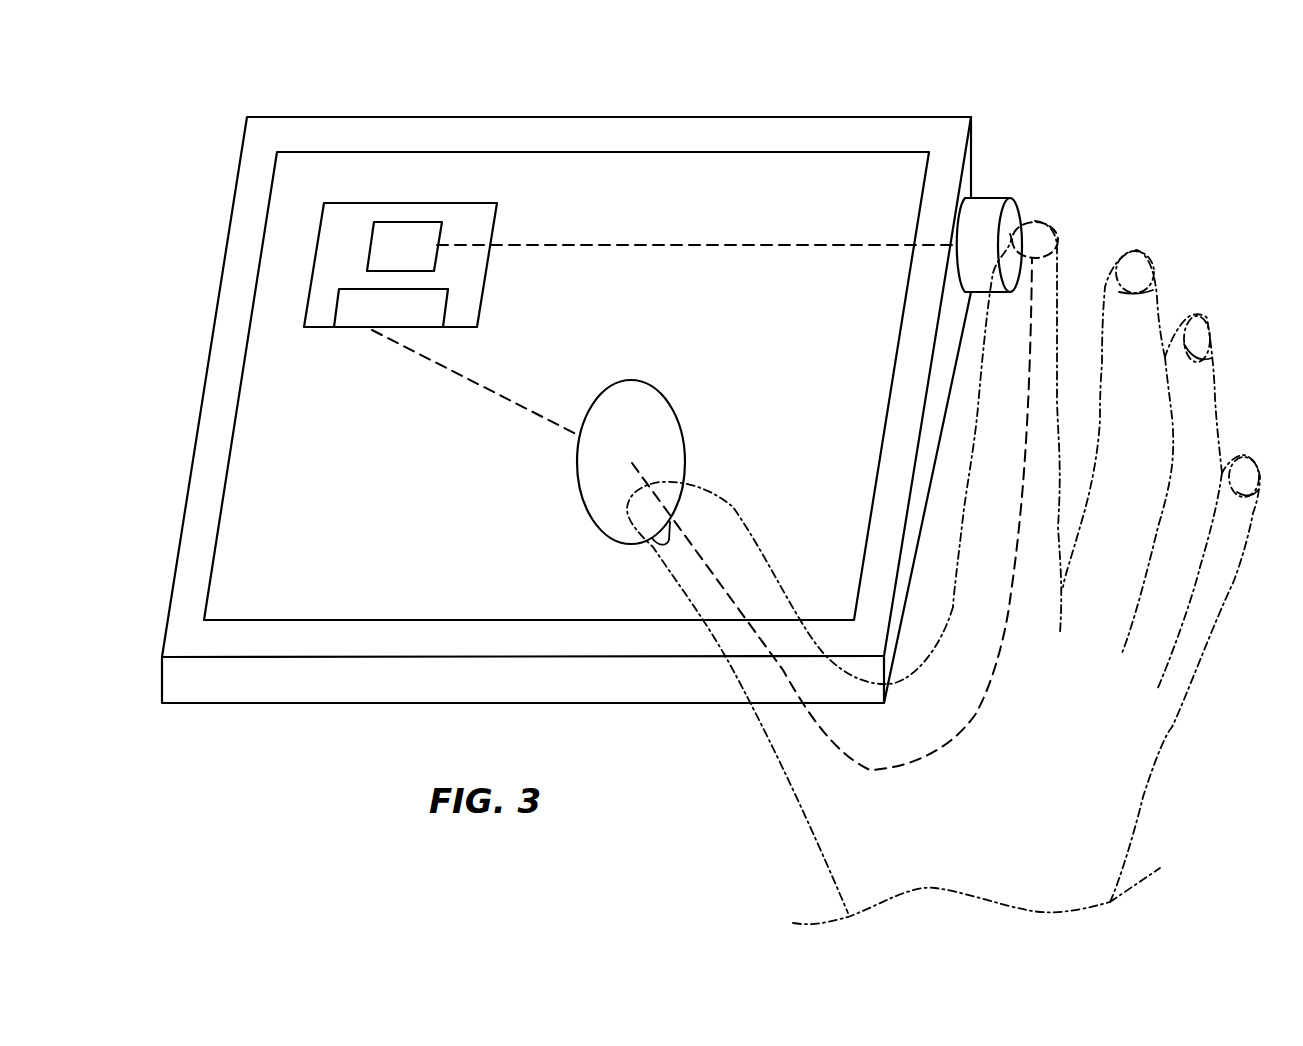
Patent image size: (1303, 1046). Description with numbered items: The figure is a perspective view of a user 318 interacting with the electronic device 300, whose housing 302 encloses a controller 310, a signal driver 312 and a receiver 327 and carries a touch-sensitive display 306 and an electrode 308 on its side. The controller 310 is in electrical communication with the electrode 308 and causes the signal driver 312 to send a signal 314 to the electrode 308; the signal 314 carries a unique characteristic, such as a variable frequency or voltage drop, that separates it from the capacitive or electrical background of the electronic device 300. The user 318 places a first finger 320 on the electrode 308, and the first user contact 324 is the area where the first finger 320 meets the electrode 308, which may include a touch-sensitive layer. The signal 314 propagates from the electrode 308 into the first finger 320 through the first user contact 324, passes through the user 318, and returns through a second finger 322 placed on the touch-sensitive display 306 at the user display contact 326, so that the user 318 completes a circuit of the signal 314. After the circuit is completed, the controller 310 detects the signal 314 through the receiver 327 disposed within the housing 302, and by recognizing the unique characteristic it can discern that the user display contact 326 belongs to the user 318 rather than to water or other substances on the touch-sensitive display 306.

The electronic device 300 is at (466, 81).
The housing 302 is at (697, 115).
The touch-sensitive display 306 is at (573, 150).
The electrode 308 is at (1012, 198).
The controller 310 is at (316, 258).
The signal driver 312 is at (412, 222).
The signal 314 is at (723, 245).
The user 318 is at (940, 850).
The first finger 320 is at (1050, 280).
The second finger 322 is at (687, 568).
The first user contact 324 is at (1036, 205).
The user display contact 326 is at (578, 482).
The receiver 327 is at (373, 307).